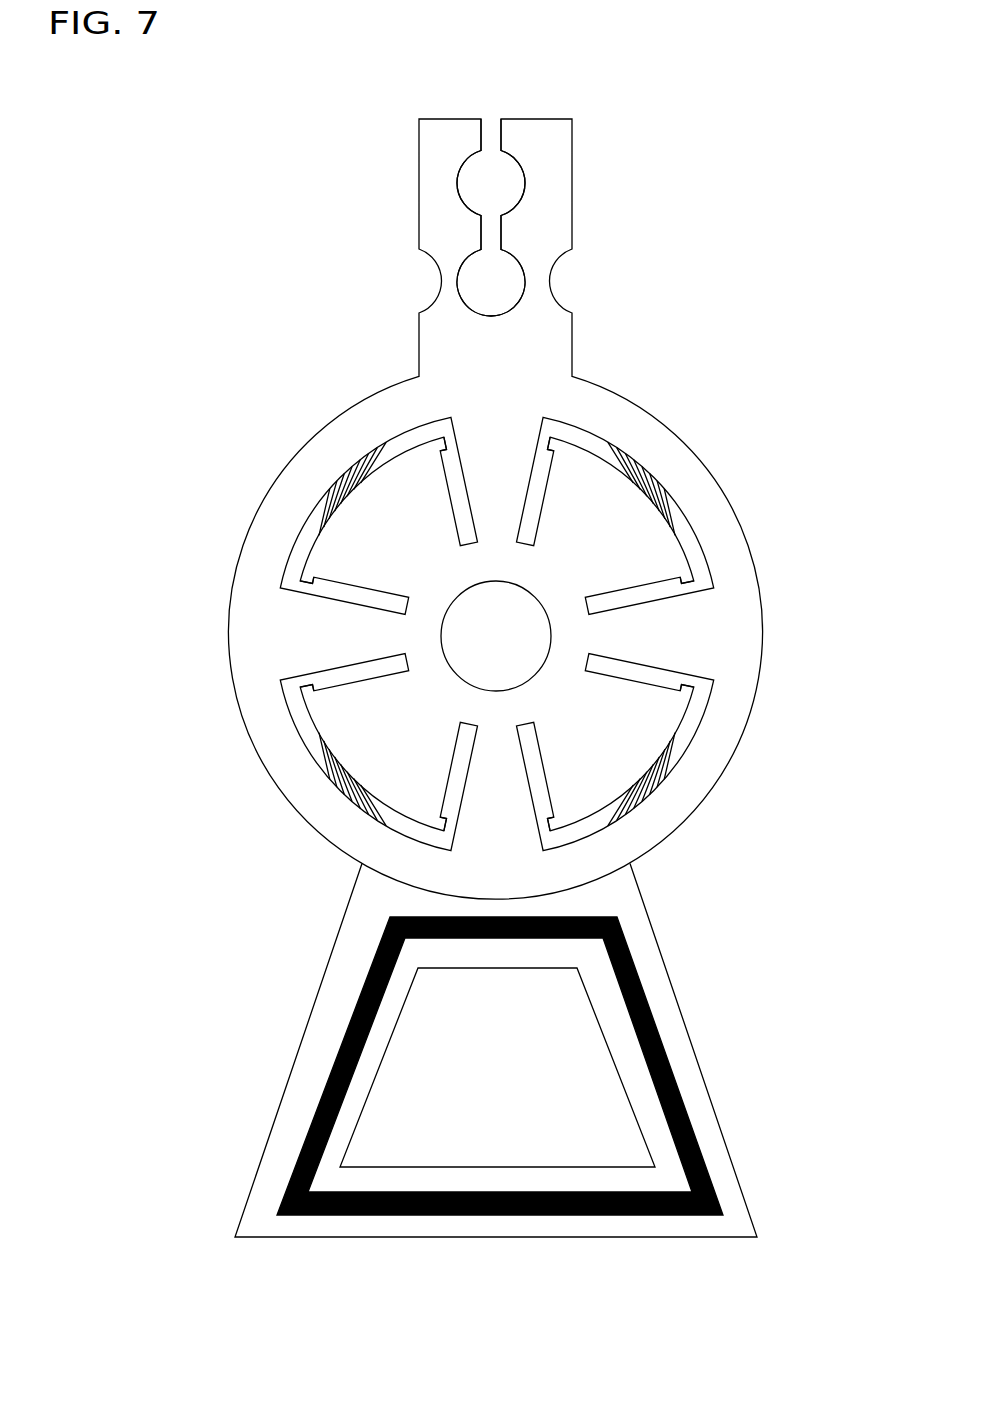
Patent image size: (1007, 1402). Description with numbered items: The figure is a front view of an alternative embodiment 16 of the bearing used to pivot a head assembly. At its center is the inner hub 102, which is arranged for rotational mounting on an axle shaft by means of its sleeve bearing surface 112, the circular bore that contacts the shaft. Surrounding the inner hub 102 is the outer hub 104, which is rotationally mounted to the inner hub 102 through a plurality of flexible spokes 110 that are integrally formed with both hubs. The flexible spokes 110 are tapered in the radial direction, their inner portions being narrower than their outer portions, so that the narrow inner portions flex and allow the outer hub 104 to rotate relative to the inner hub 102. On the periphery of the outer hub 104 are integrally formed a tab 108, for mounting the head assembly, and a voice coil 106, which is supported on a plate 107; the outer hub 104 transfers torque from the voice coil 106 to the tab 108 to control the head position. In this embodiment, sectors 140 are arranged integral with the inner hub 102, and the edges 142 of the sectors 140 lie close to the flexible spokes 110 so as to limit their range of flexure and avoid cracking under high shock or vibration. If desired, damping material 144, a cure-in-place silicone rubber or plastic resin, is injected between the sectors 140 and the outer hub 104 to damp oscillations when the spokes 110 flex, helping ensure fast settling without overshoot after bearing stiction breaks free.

The alternative embodiment of bearing 16 is at (716, 132).
The inner hub 102 is at (572, 627).
The outer hub 104 is at (420, 397).
The voice coil 106 is at (358, 1008).
The plate 107 is at (300, 1051).
The tab 108 is at (418, 195).
The flexible spokes 110 is at (307, 622).
The sleeve bearing surface 112 is at (535, 670).
The sectors 140 is at (373, 532).
The edges of sectors 142 is at (546, 444).
The damping material 144 is at (348, 494).